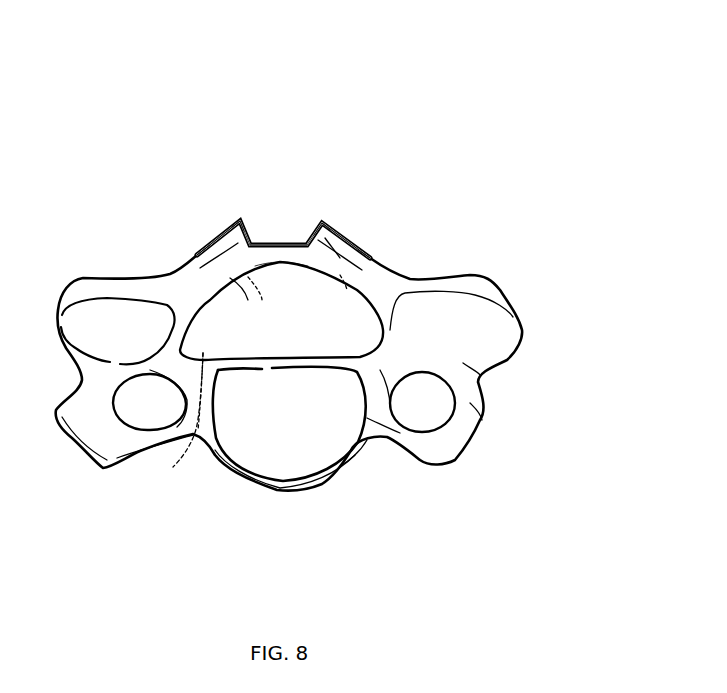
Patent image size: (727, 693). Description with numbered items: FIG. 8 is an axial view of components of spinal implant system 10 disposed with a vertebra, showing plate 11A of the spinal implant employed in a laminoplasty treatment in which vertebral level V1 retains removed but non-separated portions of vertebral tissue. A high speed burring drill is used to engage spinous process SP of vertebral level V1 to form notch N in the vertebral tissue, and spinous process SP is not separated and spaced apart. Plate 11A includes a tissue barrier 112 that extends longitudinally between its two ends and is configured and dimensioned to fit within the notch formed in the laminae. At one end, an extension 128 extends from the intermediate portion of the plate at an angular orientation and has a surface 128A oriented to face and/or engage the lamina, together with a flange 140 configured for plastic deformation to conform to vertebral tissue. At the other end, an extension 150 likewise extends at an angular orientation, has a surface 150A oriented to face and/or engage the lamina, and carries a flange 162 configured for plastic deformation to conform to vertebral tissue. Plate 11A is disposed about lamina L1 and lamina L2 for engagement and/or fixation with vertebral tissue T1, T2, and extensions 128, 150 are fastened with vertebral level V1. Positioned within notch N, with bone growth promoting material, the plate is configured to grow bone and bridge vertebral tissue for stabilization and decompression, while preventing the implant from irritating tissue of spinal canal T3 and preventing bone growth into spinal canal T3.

The spinal implant system 10 is at (104, 149).
The plate 11A is at (314, 109).
The flange 140 is at (213, 243).
The extension 128 is at (240, 221).
The tissue barrier 112 is at (307, 243).
The extension 150 is at (322, 223).
The notch N is at (337, 236).
The flange 162 is at (363, 252).
The surface 128A is at (191, 268).
The surface 150A is at (387, 267).
The spinous process SP is at (284, 263).
The lamina L1 is at (215, 282).
The lamina L2 is at (375, 293).
The vertebral tissue T1 is at (248, 277).
The vertebral tissue T2 is at (345, 278).
The spinal canal T3 is at (200, 432).
The vertebral level V1 is at (540, 370).